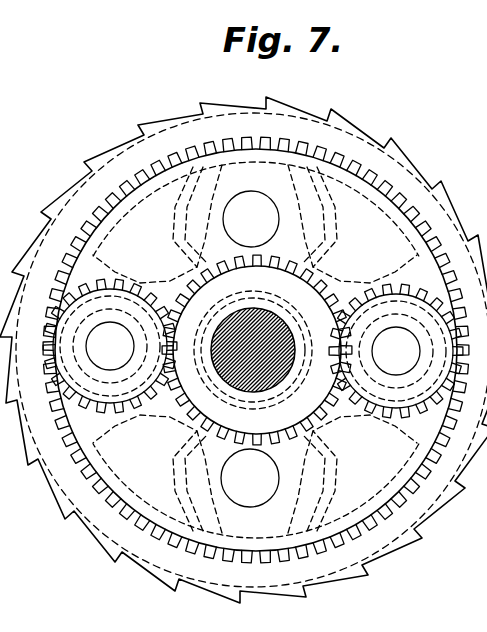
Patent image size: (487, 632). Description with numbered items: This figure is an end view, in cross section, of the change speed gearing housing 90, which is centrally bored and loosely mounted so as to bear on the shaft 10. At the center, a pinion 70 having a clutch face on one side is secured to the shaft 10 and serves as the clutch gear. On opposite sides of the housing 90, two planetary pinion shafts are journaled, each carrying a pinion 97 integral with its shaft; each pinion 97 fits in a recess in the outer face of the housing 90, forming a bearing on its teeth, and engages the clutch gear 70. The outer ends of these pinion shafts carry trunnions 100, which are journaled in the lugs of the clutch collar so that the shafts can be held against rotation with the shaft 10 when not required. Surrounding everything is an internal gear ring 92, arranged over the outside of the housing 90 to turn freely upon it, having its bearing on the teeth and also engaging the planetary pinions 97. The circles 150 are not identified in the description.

The shaft 10 is at (232, 375).
The pinion 70 is at (298, 358).
The housing 90 is at (252, 349).
The internal gear ring 92 is at (243, 350).
The pinion 97 is at (84, 331).
The trunnions 100 is at (253, 348).
The carrier pin 150 is at (250, 349).